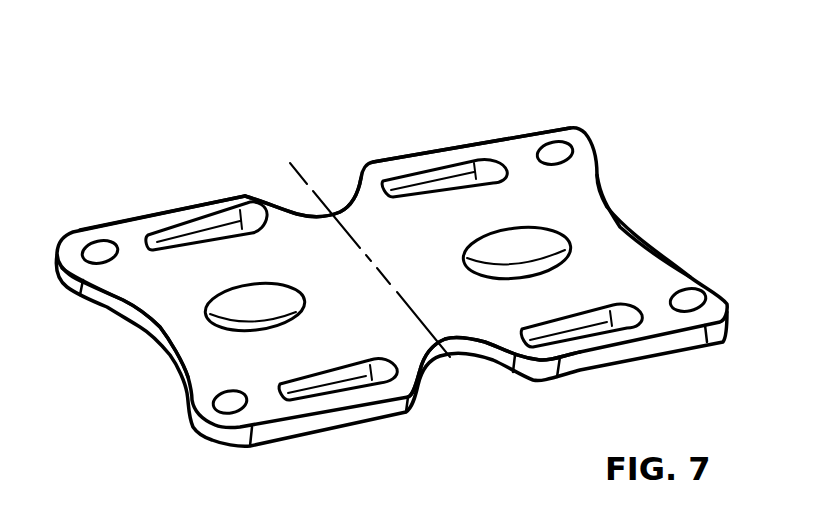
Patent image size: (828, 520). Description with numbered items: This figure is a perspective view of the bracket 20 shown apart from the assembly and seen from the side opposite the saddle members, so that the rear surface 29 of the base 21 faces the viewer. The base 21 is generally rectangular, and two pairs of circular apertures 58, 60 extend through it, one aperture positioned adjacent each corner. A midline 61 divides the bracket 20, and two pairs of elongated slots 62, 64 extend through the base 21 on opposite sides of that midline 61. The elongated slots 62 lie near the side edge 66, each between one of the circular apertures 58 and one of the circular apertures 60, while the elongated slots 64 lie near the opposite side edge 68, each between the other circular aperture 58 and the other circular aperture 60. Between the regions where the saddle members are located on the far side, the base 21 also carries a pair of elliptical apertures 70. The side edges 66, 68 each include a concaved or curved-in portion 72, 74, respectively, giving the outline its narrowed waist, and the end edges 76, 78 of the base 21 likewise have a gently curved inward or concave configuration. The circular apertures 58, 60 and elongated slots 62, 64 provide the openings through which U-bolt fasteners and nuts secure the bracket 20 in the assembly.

The bracket 20 is at (427, 268).
The base 21 is at (672, 283).
The rear surface 29 is at (505, 317).
The circular apertures 58 is at (95, 253).
The circular apertures 60 is at (557, 153).
The midline 61 is at (450, 354).
The elongated slots 62 is at (327, 393).
The elongated slots 64 is at (212, 240).
The side edge 66 is at (289, 430).
The side edge 68 is at (152, 216).
The elliptical apertures 70 is at (288, 306).
The concaved portion 72 is at (374, 317).
The concaved portion 74 is at (333, 214).
The end edge 76 is at (125, 308).
The end edge 78 is at (653, 250).